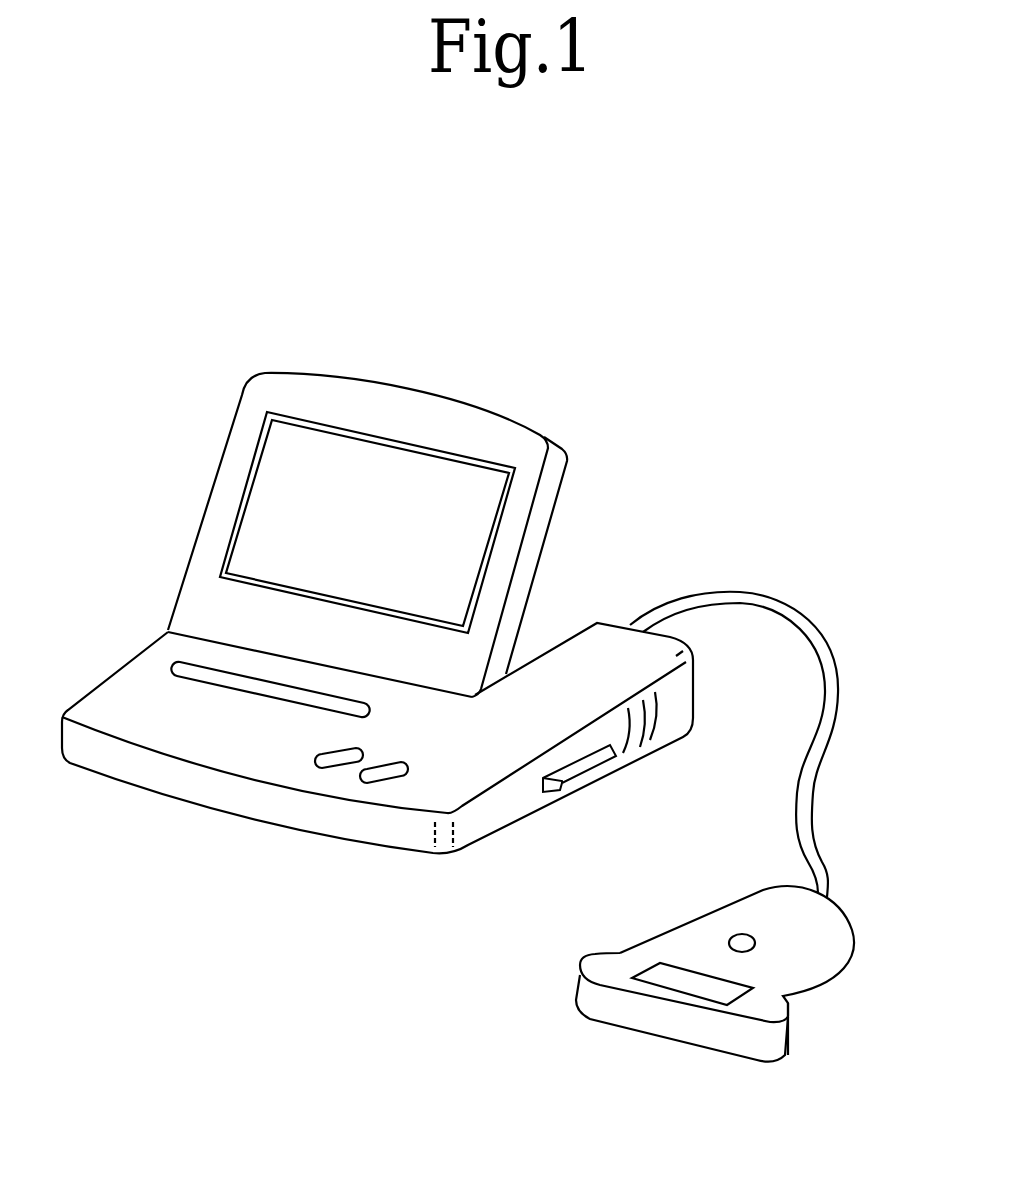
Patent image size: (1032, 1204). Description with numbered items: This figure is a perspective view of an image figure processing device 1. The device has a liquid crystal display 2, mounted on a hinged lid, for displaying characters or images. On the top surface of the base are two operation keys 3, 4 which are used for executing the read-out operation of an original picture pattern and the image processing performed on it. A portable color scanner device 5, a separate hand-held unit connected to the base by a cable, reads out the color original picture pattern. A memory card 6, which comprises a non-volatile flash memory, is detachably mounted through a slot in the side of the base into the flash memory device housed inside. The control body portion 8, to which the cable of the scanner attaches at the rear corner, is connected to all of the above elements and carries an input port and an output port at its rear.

The image figure processing device 1 is at (662, 419).
The liquid crystal display 2 is at (453, 472).
The operation key 3 is at (323, 768).
The operation key 4 is at (380, 780).
The portable color scanner device 5 is at (858, 963).
The memory card 6 is at (562, 784).
The control body portion 8 is at (617, 592).